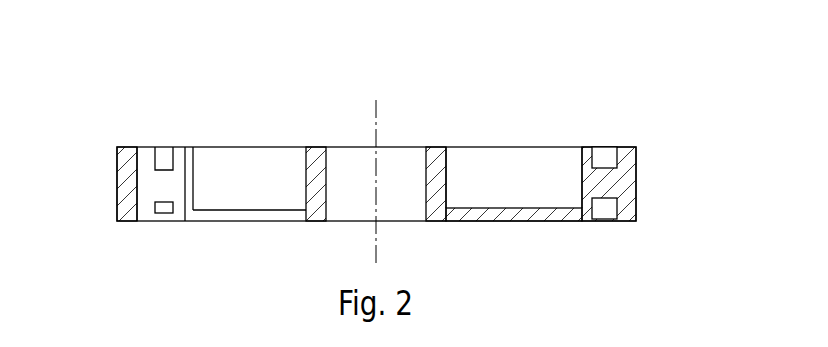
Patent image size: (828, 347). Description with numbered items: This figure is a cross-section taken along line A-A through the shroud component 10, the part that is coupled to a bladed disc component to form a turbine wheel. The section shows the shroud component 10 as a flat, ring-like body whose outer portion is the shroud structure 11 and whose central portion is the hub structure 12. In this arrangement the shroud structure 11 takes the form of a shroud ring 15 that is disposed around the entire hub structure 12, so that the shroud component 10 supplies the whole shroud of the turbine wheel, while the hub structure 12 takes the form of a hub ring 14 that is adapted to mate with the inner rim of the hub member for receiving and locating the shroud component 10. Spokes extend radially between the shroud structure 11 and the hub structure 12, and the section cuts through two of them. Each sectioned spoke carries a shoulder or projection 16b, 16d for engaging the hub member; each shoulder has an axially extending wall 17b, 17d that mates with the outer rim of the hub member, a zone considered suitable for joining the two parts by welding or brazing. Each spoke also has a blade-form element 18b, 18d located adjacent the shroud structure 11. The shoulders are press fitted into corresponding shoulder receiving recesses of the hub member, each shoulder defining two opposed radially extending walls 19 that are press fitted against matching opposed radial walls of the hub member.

The shroud component 10 is at (401, 155).
The shroud structure 11 is at (644, 192).
The hub structure 12 is at (311, 146).
The hub ring 14 is at (438, 172).
The shroud ring 15 is at (128, 163).
The shoulder or projection 16b is at (588, 162).
The shoulder or projection 16d is at (183, 172).
The axially extending wall 17b is at (580, 180).
The axially extending wall 17d is at (191, 184).
The blade-form element 18b is at (607, 182).
The blade-form element 18d is at (167, 182).
The radially extending walls 19 is at (180, 190).